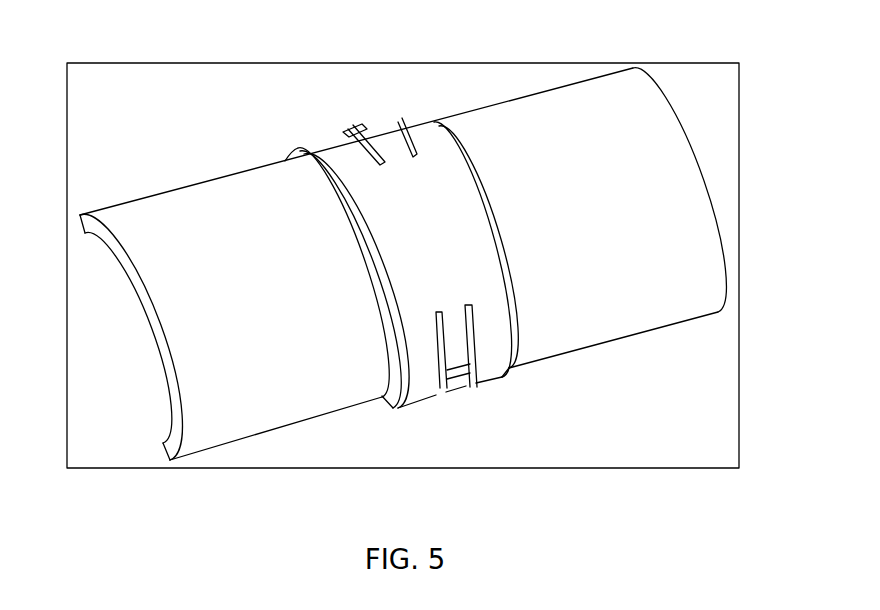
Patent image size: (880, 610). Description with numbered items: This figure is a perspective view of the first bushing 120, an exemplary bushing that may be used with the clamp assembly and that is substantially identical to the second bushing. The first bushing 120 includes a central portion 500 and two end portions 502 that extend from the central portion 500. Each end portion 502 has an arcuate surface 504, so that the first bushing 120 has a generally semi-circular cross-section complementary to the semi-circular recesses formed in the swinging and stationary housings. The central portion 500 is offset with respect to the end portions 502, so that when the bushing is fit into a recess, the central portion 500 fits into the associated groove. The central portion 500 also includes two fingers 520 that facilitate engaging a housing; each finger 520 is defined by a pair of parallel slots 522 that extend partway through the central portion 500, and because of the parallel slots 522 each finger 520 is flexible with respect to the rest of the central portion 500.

The first bushing 120 is at (300, 48).
The central portion 500 is at (408, 318).
The end portions 502 is at (183, 348).
The arcuate surface 504 is at (190, 207).
The fingers 520 is at (373, 138).
The parallel slots 522 is at (355, 133).